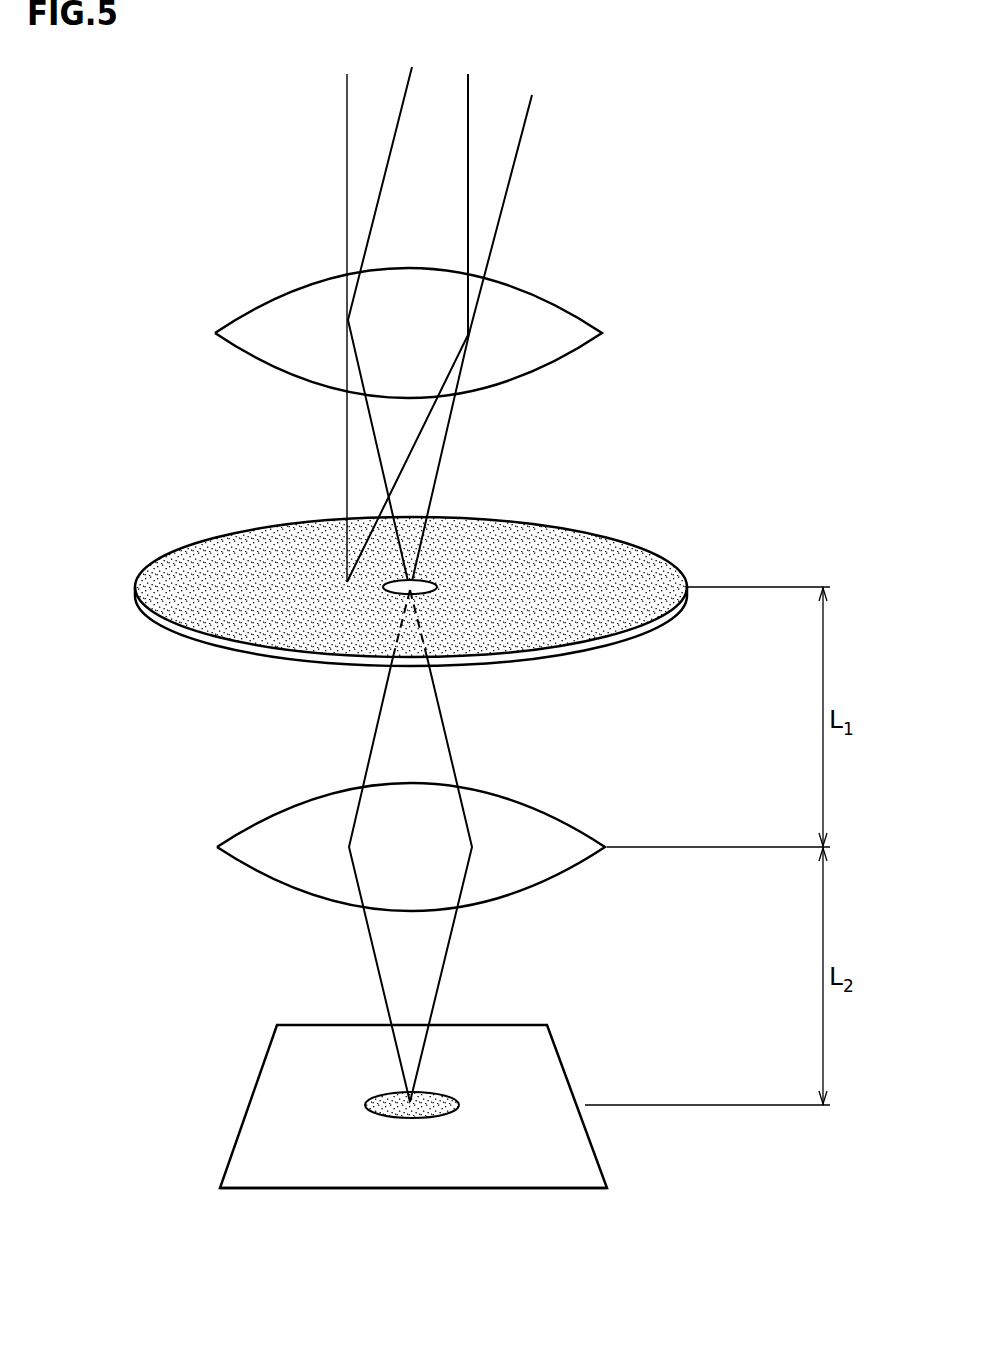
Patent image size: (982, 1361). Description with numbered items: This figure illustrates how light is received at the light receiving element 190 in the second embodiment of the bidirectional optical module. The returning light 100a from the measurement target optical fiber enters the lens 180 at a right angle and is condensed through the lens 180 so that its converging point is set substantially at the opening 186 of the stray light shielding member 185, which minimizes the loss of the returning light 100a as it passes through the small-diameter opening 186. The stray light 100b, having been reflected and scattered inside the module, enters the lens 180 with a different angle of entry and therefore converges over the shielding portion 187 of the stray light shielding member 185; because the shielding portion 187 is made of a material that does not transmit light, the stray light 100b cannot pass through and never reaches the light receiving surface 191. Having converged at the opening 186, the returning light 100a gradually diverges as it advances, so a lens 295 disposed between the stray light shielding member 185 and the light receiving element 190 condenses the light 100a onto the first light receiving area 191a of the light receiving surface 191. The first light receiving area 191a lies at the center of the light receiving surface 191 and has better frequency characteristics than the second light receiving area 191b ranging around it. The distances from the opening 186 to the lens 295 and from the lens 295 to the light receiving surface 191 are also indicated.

The returning light 100a is at (357, 130).
The stray light 100b is at (510, 137).
The lens 180 is at (560, 307).
The stray light shielding member 185 is at (450, 595).
The opening 186 is at (437, 593).
The shielding portion 187 is at (595, 610).
The lens 295 is at (565, 818).
The light receiving element 190 is at (479, 1166).
The light receiving surface 191 is at (407, 1200).
The first light receiving area 191a is at (400, 1113).
The second light receiving area 191b is at (248, 1188).